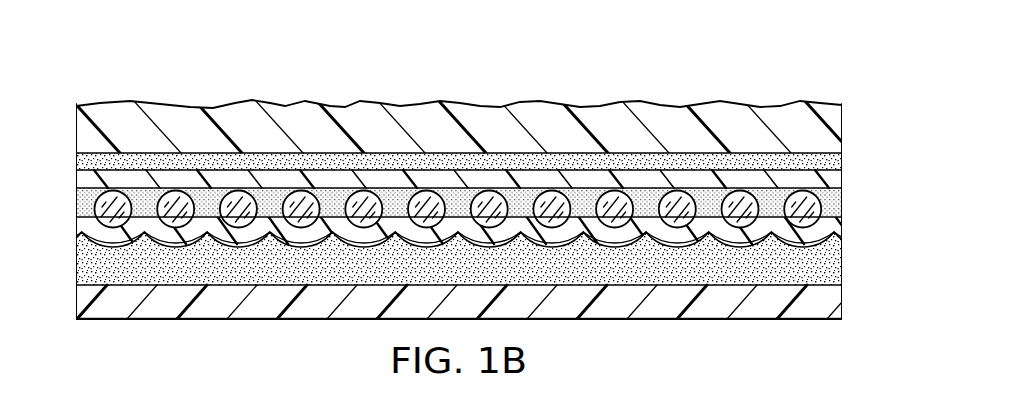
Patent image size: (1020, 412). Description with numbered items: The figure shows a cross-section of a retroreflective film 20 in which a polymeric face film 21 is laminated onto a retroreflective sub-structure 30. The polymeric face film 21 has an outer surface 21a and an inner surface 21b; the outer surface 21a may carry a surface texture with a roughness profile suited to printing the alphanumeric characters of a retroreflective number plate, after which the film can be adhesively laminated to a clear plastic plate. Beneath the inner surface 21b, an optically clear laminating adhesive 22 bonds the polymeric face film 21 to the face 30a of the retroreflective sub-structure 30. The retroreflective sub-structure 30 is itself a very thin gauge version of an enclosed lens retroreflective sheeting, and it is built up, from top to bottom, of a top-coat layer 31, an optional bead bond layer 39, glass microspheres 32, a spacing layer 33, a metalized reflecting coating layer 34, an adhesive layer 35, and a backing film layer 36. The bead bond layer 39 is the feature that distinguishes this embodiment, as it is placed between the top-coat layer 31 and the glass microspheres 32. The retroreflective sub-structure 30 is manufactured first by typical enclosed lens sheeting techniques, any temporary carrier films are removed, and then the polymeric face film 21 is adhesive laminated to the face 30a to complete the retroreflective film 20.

The retroreflective film 20 is at (467, 194).
The polymeric face film 21 is at (417, 106).
The outer surface 21a is at (227, 107).
The inner surface 21b is at (840, 150).
The optically clear laminating adhesive 22 is at (78, 163).
The retroreflective sub-structure 30 is at (66, 170).
The face 30a is at (643, 170).
The top-coat layer 31 is at (834, 178).
The glass microspheres 32 is at (721, 226).
The spacing layer 33 is at (834, 225).
The metalized reflecting coating layer 34 is at (644, 234).
The adhesive layer 35 is at (834, 263).
The backing film layer 36 is at (205, 310).
The bead bond layer 39 is at (843, 200).